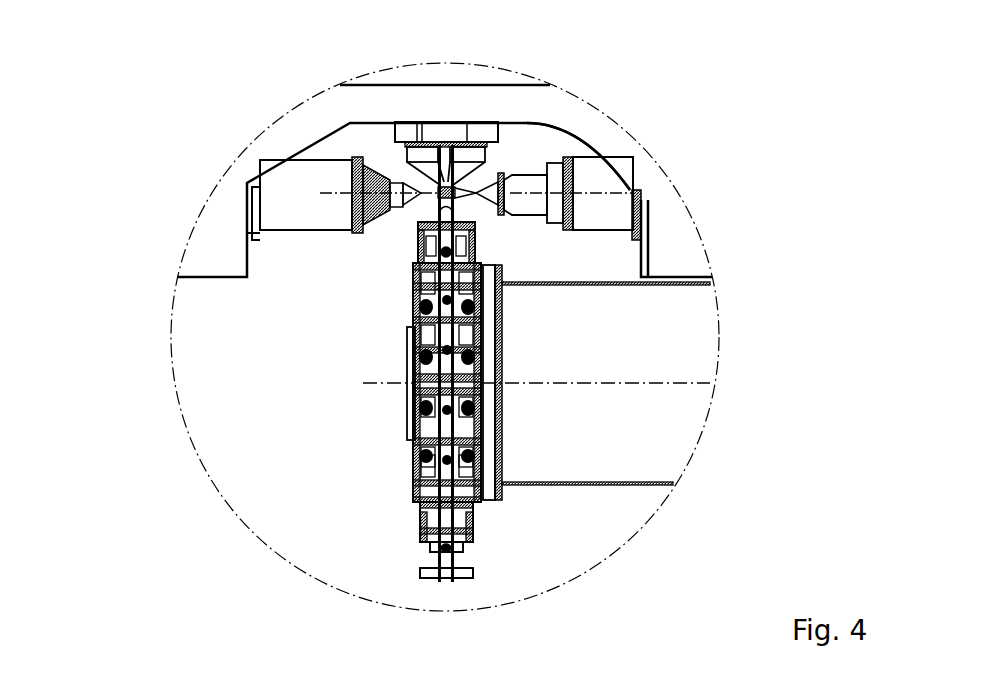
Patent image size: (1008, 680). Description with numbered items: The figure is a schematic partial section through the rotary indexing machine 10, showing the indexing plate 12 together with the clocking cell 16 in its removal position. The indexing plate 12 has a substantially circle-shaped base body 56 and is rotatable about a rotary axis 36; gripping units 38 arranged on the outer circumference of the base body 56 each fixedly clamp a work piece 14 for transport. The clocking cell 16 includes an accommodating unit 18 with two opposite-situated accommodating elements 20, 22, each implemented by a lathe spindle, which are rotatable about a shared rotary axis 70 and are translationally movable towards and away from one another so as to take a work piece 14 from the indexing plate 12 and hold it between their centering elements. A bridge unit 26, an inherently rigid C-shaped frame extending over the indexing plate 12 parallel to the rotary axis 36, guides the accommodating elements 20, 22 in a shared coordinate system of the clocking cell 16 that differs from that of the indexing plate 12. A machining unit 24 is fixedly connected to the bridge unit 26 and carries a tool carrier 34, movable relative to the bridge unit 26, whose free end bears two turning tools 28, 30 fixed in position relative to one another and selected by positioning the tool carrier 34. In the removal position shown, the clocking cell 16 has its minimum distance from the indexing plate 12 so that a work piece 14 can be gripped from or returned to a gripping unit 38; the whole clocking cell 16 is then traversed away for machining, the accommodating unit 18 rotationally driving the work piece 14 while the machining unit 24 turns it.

The rotary indexing machine 10 is at (124, 117).
The indexing plate 12 is at (390, 463).
The work piece 14 is at (410, 321).
The clocking cell 16 is at (670, 162).
The accommodating unit 18 is at (239, 203).
The accommodating element 20 is at (305, 178).
The accommodating element 22 is at (606, 180).
The machining unit 24 is at (386, 132).
The bridge unit 26 is at (513, 113).
The tool 28 is at (419, 140).
The tool 30 is at (468, 140).
The tool carrier 34 is at (413, 140).
The rotary axis 36 is at (668, 383).
The gripping unit 38 is at (410, 392).
The base body 56 is at (637, 328).
The shared rotary axis 70 is at (648, 207).